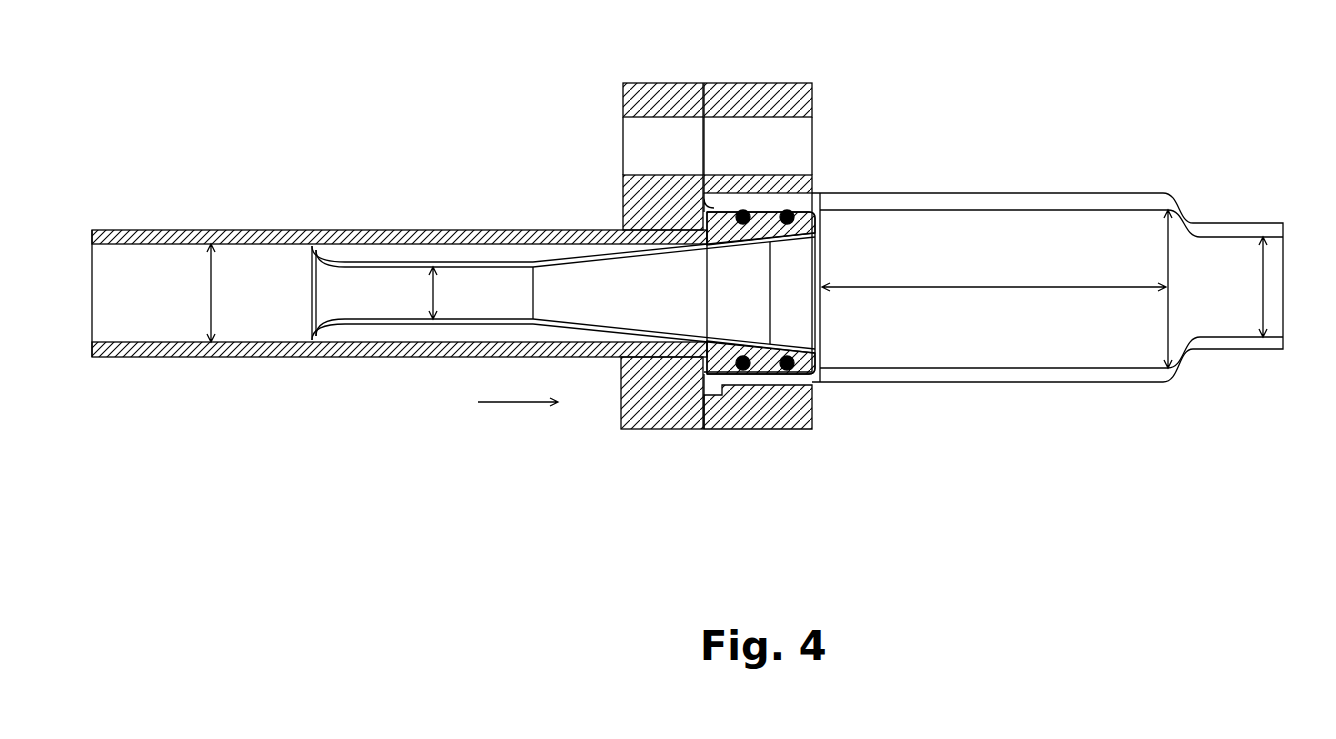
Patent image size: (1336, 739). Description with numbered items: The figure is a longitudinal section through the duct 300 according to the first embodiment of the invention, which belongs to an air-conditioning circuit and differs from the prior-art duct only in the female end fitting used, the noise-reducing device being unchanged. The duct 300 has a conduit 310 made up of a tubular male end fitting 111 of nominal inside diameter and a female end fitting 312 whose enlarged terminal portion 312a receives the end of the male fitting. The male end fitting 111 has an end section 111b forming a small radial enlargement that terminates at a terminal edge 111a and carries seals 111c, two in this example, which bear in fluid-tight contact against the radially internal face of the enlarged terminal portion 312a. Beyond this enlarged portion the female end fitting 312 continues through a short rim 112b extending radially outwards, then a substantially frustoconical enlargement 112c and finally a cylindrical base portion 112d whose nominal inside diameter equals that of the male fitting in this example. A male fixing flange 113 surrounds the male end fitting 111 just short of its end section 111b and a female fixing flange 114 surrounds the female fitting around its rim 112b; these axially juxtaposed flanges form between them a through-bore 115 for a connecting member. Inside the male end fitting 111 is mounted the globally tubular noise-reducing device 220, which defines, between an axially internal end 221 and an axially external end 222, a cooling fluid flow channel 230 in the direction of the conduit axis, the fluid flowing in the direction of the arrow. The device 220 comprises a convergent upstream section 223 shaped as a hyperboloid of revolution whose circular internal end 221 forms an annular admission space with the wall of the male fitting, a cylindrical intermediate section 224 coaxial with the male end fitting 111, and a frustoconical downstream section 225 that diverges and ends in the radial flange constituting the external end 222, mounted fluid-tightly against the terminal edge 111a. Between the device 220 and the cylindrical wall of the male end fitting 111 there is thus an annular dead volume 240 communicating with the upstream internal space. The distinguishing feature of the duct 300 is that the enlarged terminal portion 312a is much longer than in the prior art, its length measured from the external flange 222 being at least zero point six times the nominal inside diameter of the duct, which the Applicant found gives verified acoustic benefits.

The duct 300 is at (406, 434).
The conduit 310 is at (425, 212).
The tubular male end fitting 111 is at (500, 228).
The noise-reducing device 220 is at (308, 254).
The axially internal end 221 is at (320, 245).
The convergent upstream section 223 is at (332, 327).
The cylindrical intermediate section 224 is at (372, 262).
The annular dead volume 240 is at (470, 328).
The frustoconical downstream section 225 is at (582, 260).
The cooling fluid flow channel 230 is at (638, 303).
The axially external end 222 is at (813, 362).
The seals 111c is at (743, 210).
The end section 111b is at (723, 360).
The male fixing flange 113 is at (618, 90).
The female fixing flange 114 is at (822, 88).
The through-bore 115 is at (812, 128).
The short rim 112b is at (712, 198).
The terminal edge 111a is at (806, 212).
The female end fitting 312 is at (1027, 188).
The enlarged terminal portion 312a is at (893, 205).
The frustoconical enlargement 112c is at (1182, 218).
The cylindrical base portion 112d is at (1260, 232).